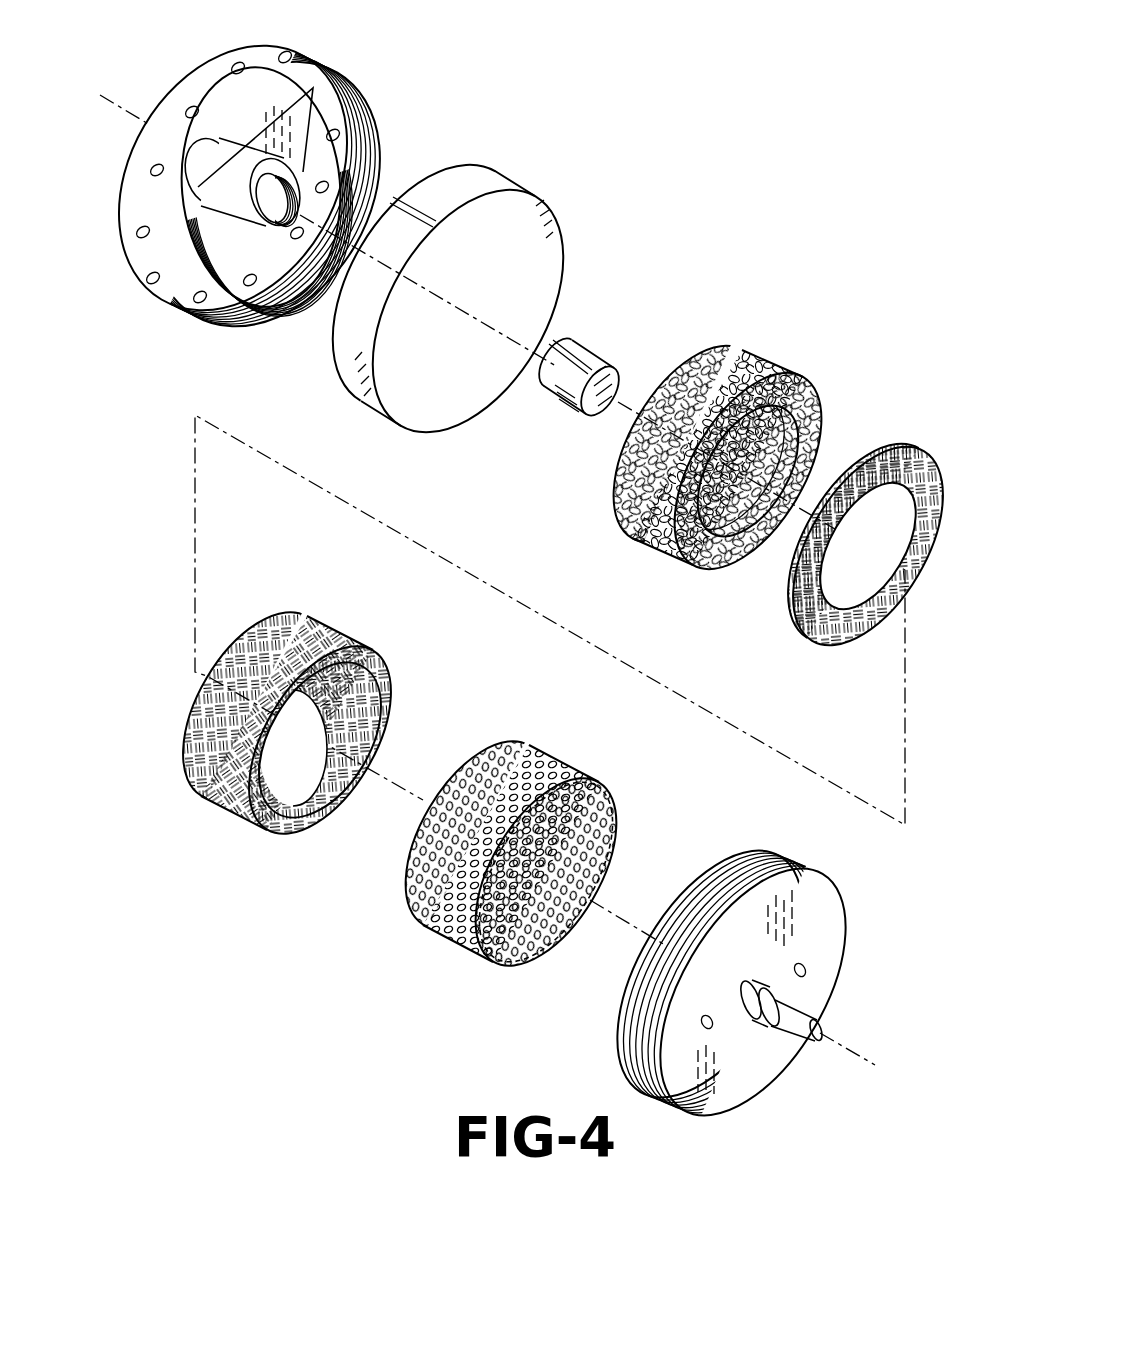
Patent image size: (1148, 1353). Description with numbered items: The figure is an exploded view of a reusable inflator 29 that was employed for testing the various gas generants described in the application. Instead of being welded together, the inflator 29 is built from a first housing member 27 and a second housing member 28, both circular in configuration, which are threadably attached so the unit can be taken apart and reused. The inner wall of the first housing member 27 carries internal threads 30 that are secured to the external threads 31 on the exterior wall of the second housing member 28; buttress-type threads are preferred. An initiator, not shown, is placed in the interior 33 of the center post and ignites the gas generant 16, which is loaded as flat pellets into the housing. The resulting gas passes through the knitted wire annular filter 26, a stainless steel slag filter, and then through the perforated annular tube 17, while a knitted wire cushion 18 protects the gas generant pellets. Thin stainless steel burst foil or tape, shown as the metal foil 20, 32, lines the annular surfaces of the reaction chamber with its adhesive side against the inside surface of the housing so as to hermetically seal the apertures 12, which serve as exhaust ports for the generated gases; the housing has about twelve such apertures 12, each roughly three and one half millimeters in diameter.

The apertures 12 is at (242, 64).
The gas generant 16 is at (763, 372).
The perforated annular tube 17 is at (443, 925).
The knitted wire cushion 18 is at (892, 457).
The metal foil 20 is at (500, 185).
The knitted wire annular filter 26 is at (226, 800).
The first housing member 27 is at (145, 272).
The second housing member 28 is at (848, 930).
The reusable inflator 29 is at (728, 132).
The internal threads 30 is at (298, 302).
The external threads 31 is at (768, 858).
The metal foil 32 is at (588, 357).
The interior of the center post 33 is at (282, 200).